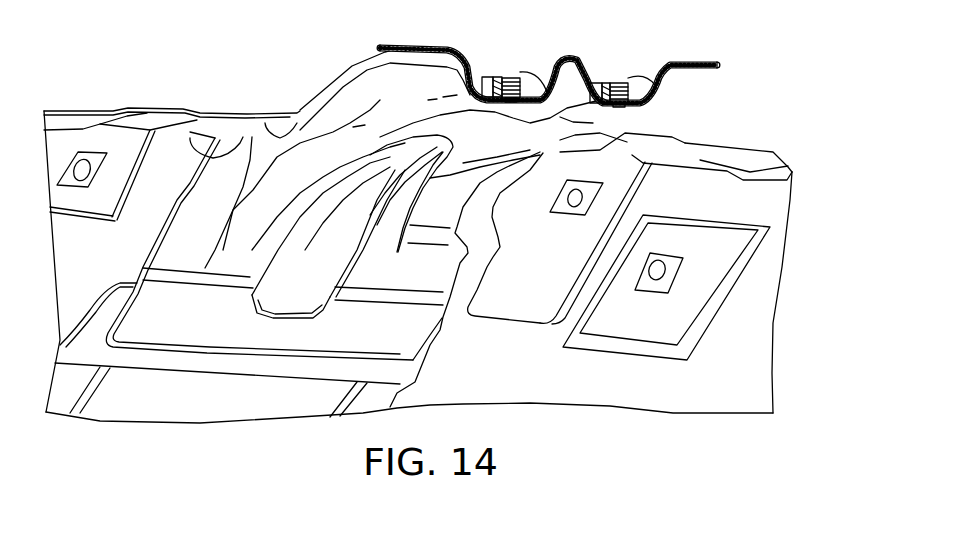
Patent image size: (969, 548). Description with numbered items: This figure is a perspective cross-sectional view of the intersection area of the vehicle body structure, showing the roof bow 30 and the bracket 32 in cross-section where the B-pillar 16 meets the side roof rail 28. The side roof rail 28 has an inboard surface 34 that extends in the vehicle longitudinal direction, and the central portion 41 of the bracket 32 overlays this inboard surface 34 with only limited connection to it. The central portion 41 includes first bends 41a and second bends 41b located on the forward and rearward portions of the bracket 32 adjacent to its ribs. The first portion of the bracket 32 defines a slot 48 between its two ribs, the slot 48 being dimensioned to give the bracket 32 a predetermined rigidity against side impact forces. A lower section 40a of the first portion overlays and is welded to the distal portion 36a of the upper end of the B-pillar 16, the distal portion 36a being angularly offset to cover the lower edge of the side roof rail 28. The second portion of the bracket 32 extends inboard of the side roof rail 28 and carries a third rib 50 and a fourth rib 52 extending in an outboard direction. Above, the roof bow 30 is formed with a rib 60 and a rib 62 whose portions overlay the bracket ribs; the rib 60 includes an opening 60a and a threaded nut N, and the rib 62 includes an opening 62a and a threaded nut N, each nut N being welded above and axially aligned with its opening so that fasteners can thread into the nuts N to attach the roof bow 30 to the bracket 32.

The B-pillar 16 is at (188, 393).
The side roof rail 28 is at (743, 343).
The roof bow 30 is at (687, 62).
The bracket 32 is at (153, 243).
The inboard surface 34 is at (715, 383).
The distal portion 36a is at (423, 355).
The lower section 40a is at (397, 327).
The central portion 41 is at (338, 97).
The first bends 41a is at (195, 147).
The second bends 41b is at (272, 128).
The slot 48 is at (357, 247).
The third rib 50 is at (480, 110).
The fourth rib 52 is at (620, 110).
The rib 60 is at (523, 90).
The opening 60a is at (507, 77).
The rib 62 is at (642, 80).
The opening 62a is at (612, 82).
The threaded nut N is at (490, 77).